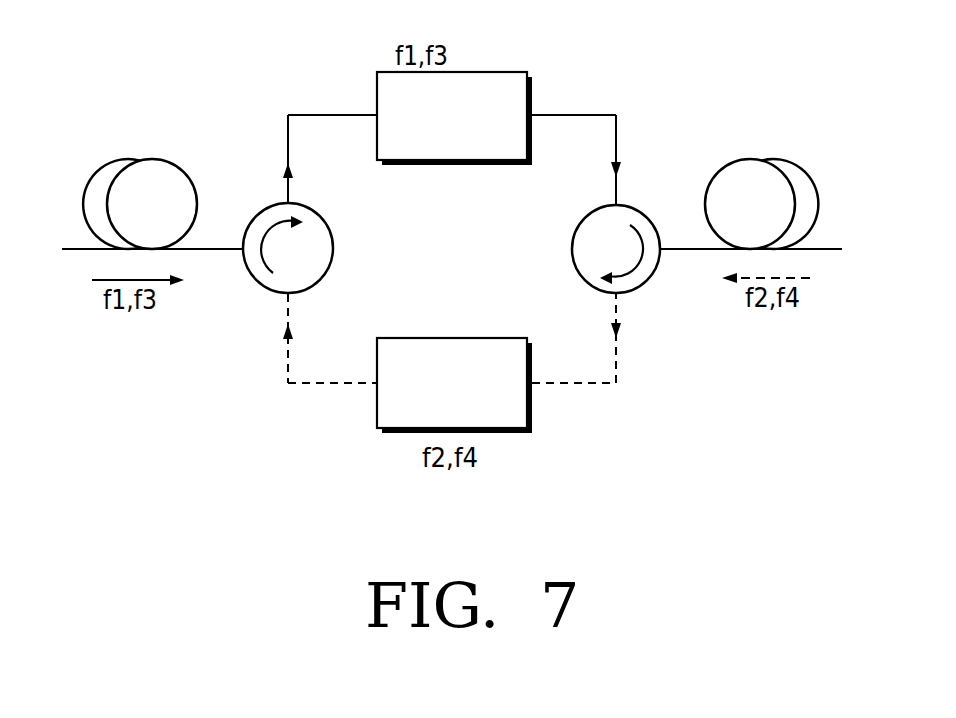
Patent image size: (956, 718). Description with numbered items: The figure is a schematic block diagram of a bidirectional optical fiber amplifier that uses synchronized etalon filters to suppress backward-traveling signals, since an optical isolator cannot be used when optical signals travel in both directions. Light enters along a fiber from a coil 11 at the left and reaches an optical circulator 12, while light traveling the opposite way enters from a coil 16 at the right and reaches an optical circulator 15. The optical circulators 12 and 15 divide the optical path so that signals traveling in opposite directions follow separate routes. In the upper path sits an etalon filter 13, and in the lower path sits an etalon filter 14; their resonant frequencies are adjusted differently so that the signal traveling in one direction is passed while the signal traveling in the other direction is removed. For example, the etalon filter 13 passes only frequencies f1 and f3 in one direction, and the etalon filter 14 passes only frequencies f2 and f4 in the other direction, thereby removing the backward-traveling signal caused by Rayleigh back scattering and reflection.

The input optical fiber coil 11 is at (118, 160).
The optical circulator 12 is at (333, 247).
The etalon filter 13 is at (493, 71).
The etalon filter 14 is at (451, 337).
The optical circulator 15 is at (572, 246).
The output optical fiber coil 16 is at (787, 160).